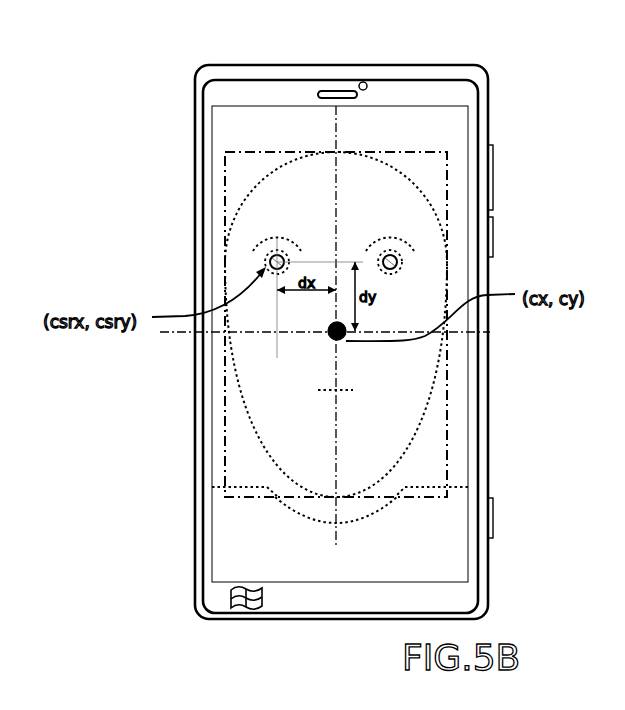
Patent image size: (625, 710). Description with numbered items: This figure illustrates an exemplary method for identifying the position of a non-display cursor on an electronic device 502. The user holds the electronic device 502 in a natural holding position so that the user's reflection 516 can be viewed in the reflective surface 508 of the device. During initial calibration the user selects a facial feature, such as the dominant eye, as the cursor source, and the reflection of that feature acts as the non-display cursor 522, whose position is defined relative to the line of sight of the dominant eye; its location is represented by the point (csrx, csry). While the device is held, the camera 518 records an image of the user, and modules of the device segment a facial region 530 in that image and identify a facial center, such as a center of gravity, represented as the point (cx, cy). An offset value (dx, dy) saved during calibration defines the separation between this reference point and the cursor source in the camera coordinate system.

The electronic device 502 is at (200, 467).
The reflective surface 508 is at (455, 315).
The reflection 516 is at (422, 188).
The camera 518 is at (362, 82).
The non-display cursor 522 is at (270, 254).
The facial region 530 is at (447, 424).